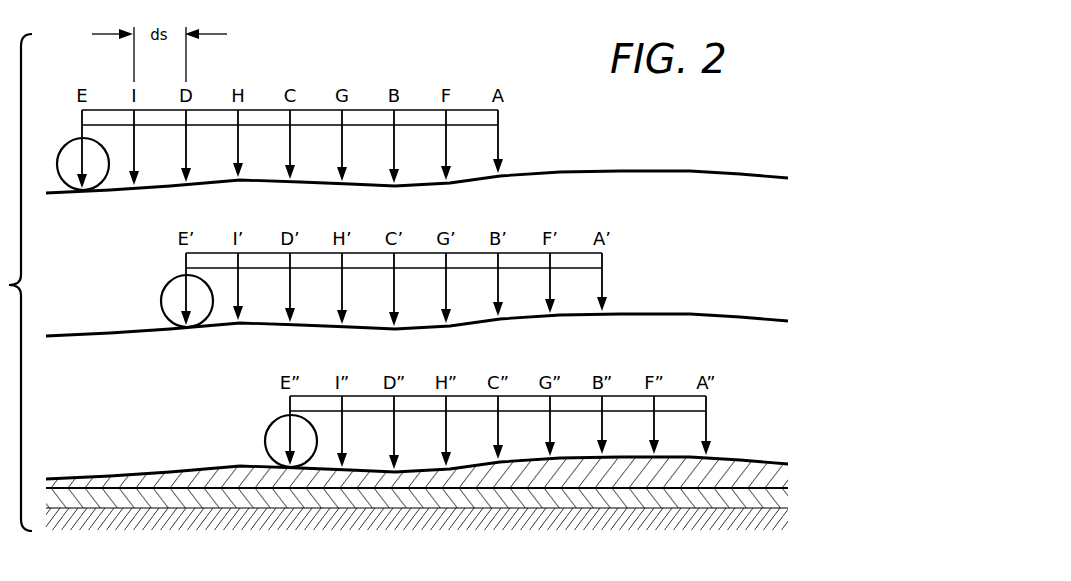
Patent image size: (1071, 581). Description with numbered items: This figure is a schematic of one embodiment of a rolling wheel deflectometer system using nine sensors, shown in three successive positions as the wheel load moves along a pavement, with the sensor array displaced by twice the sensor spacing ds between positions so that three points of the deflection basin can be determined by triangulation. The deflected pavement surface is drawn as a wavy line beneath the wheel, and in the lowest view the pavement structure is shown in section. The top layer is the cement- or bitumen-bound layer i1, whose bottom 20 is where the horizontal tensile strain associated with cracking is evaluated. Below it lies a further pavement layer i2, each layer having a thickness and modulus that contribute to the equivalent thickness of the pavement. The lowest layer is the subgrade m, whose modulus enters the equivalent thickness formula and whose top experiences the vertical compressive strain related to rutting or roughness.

The bottom of bound layer 20 is at (176, 488).
The cement- or bitumen-bound layer i1 is at (95, 480).
The pavement layer i2 is at (150, 497).
The subgrade m is at (210, 518).